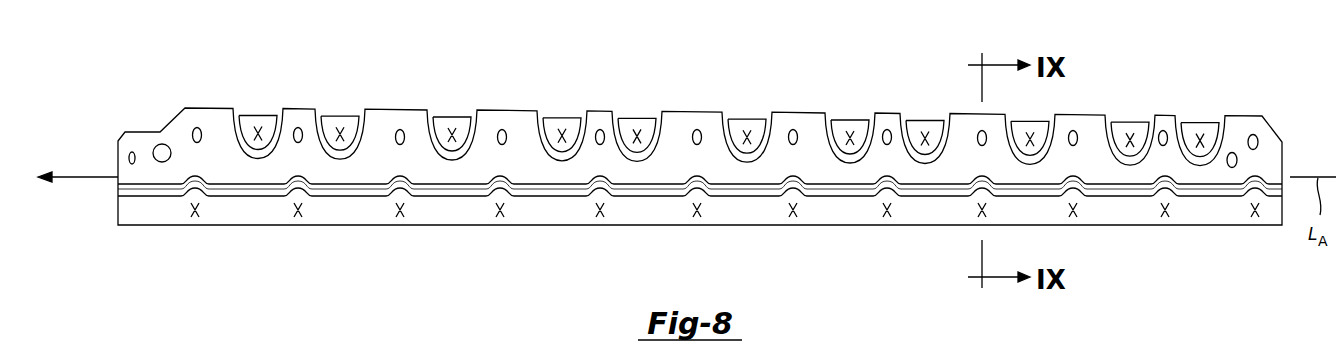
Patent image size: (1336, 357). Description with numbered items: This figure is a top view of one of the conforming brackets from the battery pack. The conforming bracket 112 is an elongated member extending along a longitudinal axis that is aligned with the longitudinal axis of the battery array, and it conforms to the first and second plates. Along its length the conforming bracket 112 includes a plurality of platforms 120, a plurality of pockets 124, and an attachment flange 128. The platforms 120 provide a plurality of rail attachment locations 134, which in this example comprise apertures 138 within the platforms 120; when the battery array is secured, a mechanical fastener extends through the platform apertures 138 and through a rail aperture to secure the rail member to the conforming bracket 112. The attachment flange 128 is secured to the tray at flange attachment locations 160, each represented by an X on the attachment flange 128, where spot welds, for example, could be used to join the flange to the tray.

The conforming bracket 112 is at (918, 212).
The platforms 120 is at (601, 125).
The pockets 124 is at (342, 117).
The attachment flange 128 is at (752, 210).
The rail attachment locations 134 is at (884, 121).
The apertures 138 is at (878, 152).
The flange attachment locations 160 is at (402, 228).